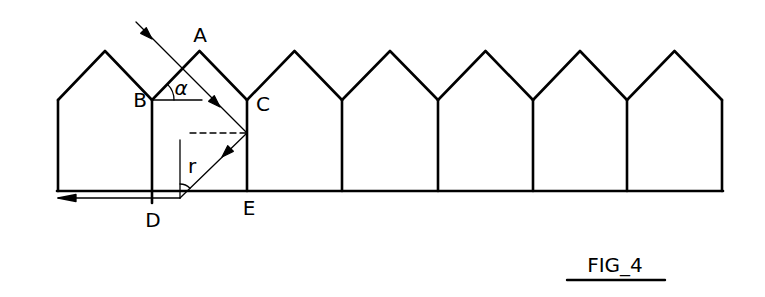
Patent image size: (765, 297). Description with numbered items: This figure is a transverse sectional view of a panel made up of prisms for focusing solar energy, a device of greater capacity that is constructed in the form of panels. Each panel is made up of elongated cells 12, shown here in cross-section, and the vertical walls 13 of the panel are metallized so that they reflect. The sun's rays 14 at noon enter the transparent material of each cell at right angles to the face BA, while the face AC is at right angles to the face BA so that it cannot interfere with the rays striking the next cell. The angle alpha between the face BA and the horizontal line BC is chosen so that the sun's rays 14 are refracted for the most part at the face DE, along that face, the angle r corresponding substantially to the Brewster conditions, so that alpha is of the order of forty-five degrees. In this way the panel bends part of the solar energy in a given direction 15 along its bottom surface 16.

The elongated cells 12 is at (92, 129).
The vertical walls 13 is at (58, 117).
The sun's rays 14 is at (183, 99).
The given direction 15 is at (127, 200).
The bottom surface 16 is at (312, 198).